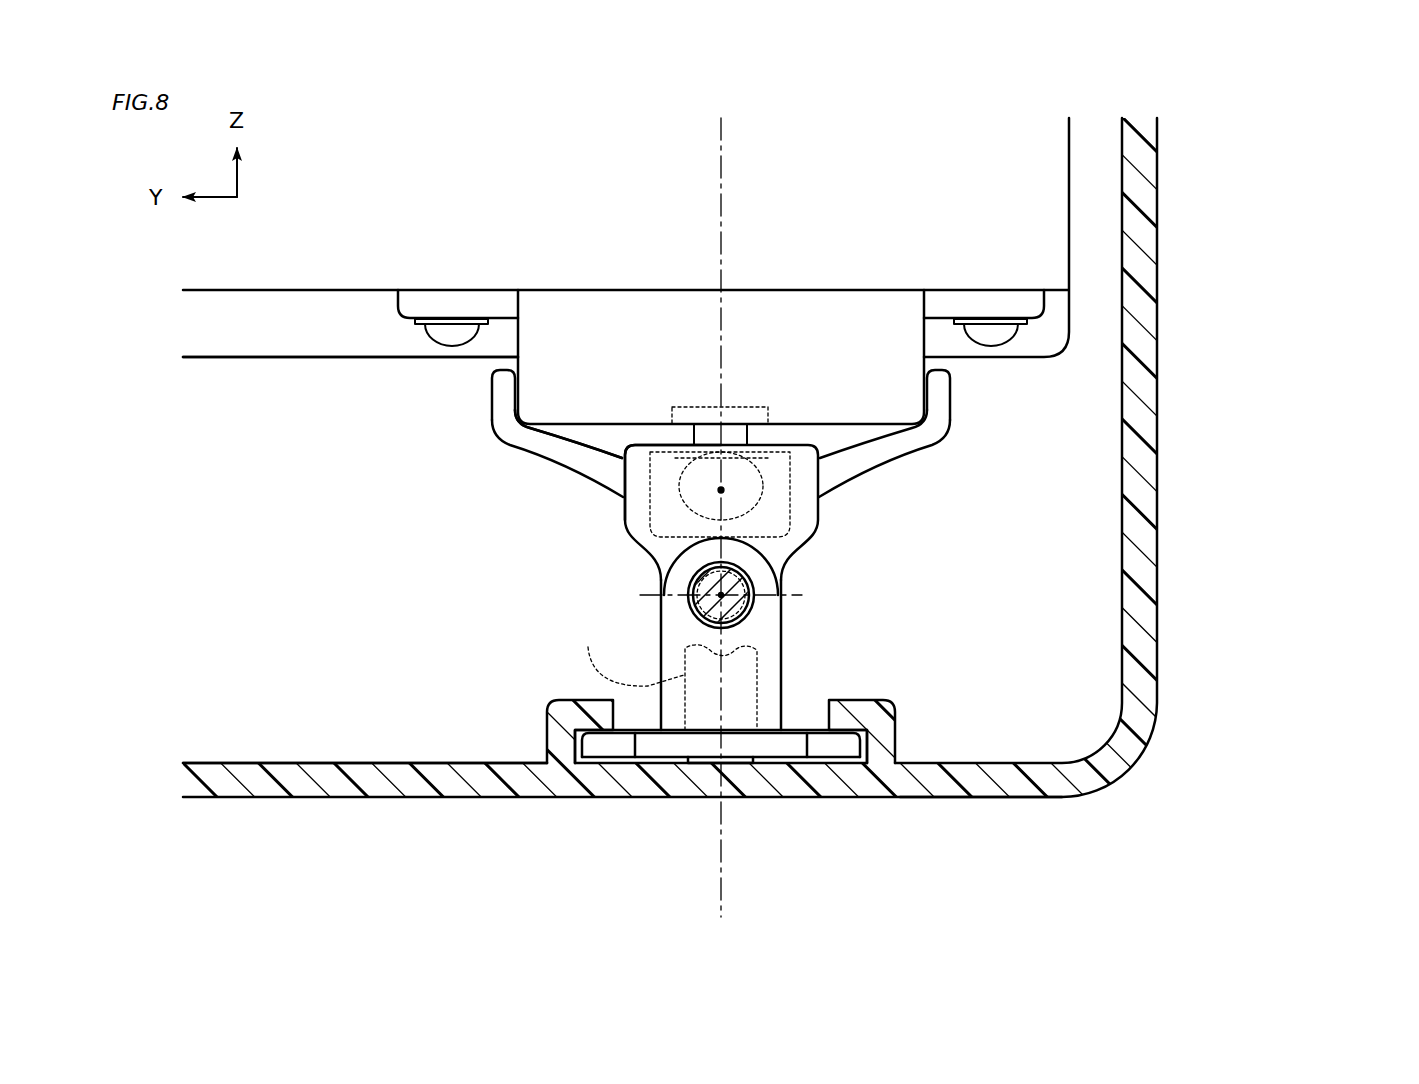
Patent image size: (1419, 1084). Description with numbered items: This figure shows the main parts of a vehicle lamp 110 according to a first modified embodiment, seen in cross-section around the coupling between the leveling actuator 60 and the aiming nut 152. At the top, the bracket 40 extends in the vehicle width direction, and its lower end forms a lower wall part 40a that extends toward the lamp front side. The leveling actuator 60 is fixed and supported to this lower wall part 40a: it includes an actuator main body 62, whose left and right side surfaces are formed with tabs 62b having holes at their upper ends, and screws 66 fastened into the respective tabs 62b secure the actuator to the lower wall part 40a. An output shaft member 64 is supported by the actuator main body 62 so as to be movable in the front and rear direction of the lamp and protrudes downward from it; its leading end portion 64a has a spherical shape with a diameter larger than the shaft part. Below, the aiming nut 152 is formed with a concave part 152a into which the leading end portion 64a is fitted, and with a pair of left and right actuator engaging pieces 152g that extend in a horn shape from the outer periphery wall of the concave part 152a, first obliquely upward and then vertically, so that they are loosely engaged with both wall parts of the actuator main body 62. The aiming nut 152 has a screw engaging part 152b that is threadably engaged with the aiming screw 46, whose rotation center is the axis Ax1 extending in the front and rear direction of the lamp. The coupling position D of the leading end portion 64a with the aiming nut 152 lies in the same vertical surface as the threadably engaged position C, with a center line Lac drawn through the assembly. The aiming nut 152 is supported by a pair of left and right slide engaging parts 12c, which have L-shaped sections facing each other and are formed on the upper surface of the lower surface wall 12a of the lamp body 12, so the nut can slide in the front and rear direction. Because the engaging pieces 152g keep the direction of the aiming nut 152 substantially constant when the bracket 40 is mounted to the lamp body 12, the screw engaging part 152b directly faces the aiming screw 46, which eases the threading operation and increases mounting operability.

The lamp body 12 is at (1160, 538).
The lower surface wall 12a is at (384, 787).
The slide engaging parts 12c is at (572, 703).
The vehicle lamp 110 is at (1202, 733).
The bracket 40 is at (1072, 189).
The lower wall part 40a is at (303, 290).
The actuator main body 62 is at (800, 318).
The tabs 62b is at (408, 314).
The screws 66 is at (452, 338).
The output shaft member 64 is at (737, 437).
The leading end portion 64a is at (798, 537).
The aiming nut 152 is at (823, 514).
The concave part 152a is at (623, 508).
The screw engaging part 152b is at (615, 655).
The actuator engaging pieces 152g is at (502, 418).
The leveling actuator 60 is at (563, 427).
The aiming screw 46 is at (756, 587).
The coupling position D is at (721, 490).
The axis Ax1 is at (747, 620).
The threadably engaged position C is at (895, 656).
The center line Lac is at (721, 841).